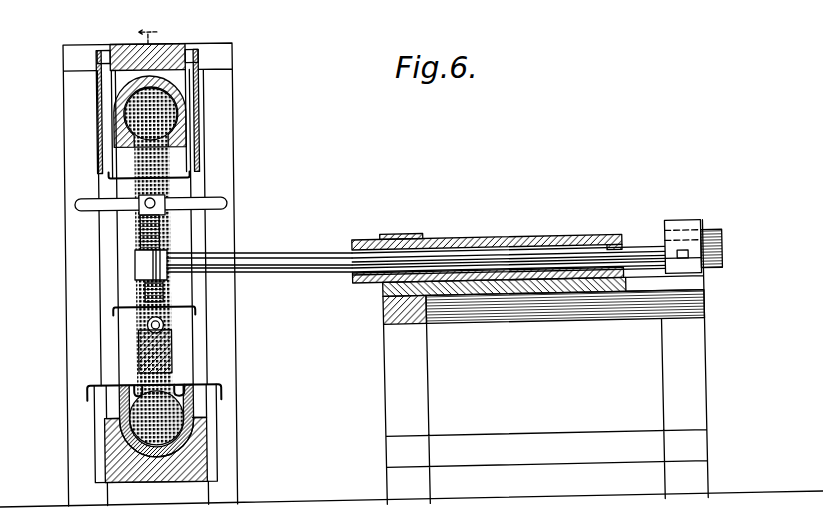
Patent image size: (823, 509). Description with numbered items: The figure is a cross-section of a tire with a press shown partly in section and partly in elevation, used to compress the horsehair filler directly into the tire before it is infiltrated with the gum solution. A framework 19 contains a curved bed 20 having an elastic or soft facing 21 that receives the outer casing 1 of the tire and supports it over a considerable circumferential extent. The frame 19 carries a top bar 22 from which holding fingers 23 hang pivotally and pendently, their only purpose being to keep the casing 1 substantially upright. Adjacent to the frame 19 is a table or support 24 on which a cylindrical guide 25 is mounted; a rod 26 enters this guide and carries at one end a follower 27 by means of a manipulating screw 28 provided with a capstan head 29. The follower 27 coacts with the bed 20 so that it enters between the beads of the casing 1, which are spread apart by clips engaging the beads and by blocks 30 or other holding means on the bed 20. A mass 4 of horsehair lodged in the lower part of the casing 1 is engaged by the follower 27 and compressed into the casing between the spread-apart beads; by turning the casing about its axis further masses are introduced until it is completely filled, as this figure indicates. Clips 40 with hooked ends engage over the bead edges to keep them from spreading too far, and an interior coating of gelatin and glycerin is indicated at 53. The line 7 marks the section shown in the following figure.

The outer casing 1 is at (175, 93).
The mass of horsehair 4 is at (165, 122).
The section line 7— 7 is at (148, 27).
The framework 19 is at (222, 350).
The curved bed 20 is at (190, 461).
The elastic or soft facing 21 is at (195, 444).
The top bar 22 is at (173, 48).
The holding fingers 23 is at (107, 90).
The table or support 24 is at (683, 283).
The cylindrical guide 25 is at (512, 240).
The rod 26 is at (330, 262).
The follower 27 is at (147, 352).
The manipulating screw 28 is at (148, 295).
The capstan head 29 is at (133, 210).
The blocks 30 is at (95, 411).
The clips 40 is at (108, 178).
The coating of gelatin and glycerin 53 is at (118, 118).